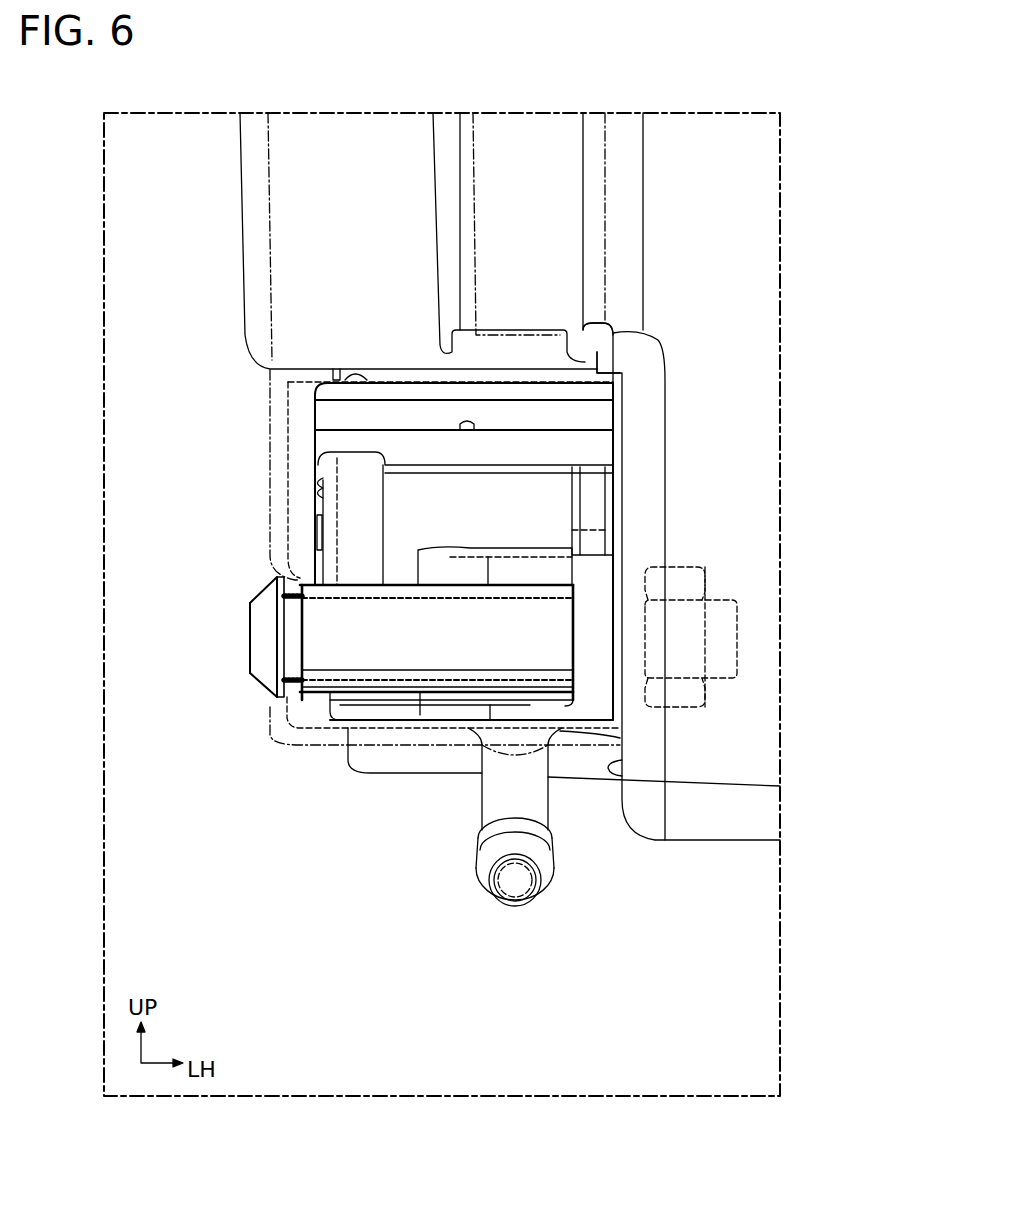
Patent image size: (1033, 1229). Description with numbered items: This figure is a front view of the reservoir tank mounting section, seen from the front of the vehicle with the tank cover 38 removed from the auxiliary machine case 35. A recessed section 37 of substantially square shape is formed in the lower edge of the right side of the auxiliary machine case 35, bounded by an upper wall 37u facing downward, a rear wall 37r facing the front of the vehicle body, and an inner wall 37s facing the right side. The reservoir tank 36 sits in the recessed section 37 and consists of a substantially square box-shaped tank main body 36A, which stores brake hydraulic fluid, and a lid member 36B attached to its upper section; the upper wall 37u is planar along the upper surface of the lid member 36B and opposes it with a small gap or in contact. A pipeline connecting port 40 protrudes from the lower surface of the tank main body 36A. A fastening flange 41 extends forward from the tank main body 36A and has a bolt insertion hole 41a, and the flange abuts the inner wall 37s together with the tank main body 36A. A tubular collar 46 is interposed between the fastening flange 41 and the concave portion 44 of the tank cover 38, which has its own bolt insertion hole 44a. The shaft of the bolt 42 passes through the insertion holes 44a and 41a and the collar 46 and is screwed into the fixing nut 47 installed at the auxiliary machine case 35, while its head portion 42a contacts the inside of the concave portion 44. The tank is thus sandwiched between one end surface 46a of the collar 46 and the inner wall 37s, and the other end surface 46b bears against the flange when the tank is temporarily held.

The auxiliary machine case 35 is at (750, 272).
The reservoir tank 36 is at (330, 727).
The tank main body 36A is at (553, 500).
The lid member 36B is at (537, 393).
The recessed section 37 is at (617, 413).
The upper wall 37u is at (345, 397).
The inner wall 37s is at (622, 768).
The rear wall 37r is at (408, 757).
The tank cover 38 is at (268, 503).
The pipeline connecting port 40 is at (530, 805).
The fastening flange 41 is at (600, 580).
The bolt insertion hole 41a is at (610, 655).
The bolt 42 is at (212, 669).
The head portion 42a is at (263, 667).
The concave portion 44 is at (263, 695).
The bolt insertion hole 44a is at (293, 600).
The collar 46 is at (380, 640).
The one end surface 46a is at (572, 590).
The other end surface 46b is at (292, 593).
The fixing nut 47 is at (707, 567).